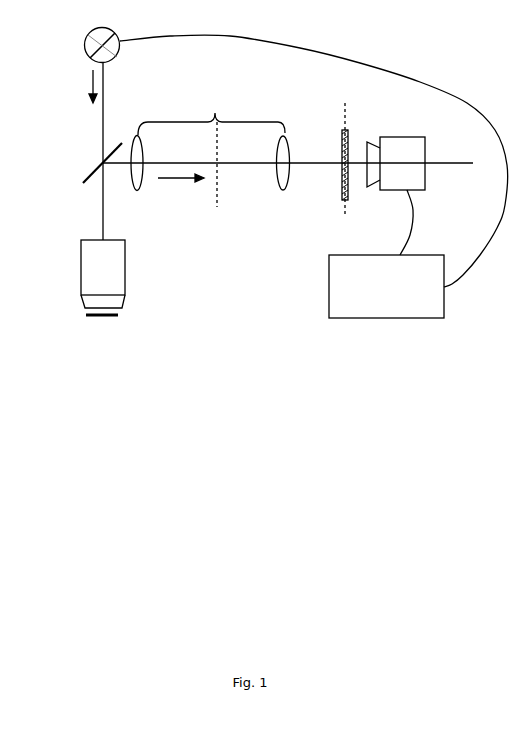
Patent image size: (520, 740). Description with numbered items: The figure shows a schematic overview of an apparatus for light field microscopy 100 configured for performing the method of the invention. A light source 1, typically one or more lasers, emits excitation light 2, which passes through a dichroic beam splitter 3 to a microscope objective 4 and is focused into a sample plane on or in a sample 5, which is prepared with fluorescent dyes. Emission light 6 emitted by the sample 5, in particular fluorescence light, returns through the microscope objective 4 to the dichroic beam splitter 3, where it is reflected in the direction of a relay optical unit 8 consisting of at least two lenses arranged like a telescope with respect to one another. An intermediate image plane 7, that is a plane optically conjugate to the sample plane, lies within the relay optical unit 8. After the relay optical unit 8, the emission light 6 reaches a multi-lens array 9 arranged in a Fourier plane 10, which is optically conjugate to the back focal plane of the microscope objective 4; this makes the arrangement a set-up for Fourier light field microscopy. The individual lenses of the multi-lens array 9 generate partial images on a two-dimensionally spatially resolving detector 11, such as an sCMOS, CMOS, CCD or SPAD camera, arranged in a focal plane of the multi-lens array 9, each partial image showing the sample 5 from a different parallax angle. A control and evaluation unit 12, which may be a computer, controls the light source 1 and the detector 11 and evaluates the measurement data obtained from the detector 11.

The light source 1 is at (94, 45).
The excitation light 2 is at (87, 86).
The dichroic beam splitter 3 is at (99, 163).
The microscope objective 4 is at (96, 274).
The sample 5 is at (102, 325).
The emission light 6 is at (181, 186).
The intermediate image plane 7 is at (217, 172).
The relay optical unit 8 is at (210, 140).
The multi-lens array 9 is at (335, 195).
The Fourier plane 10 is at (350, 149).
The detector 11 is at (396, 163).
The control and evaluation unit 12 is at (386, 286).
The apparatus for light field microscopy 100 is at (221, 342).